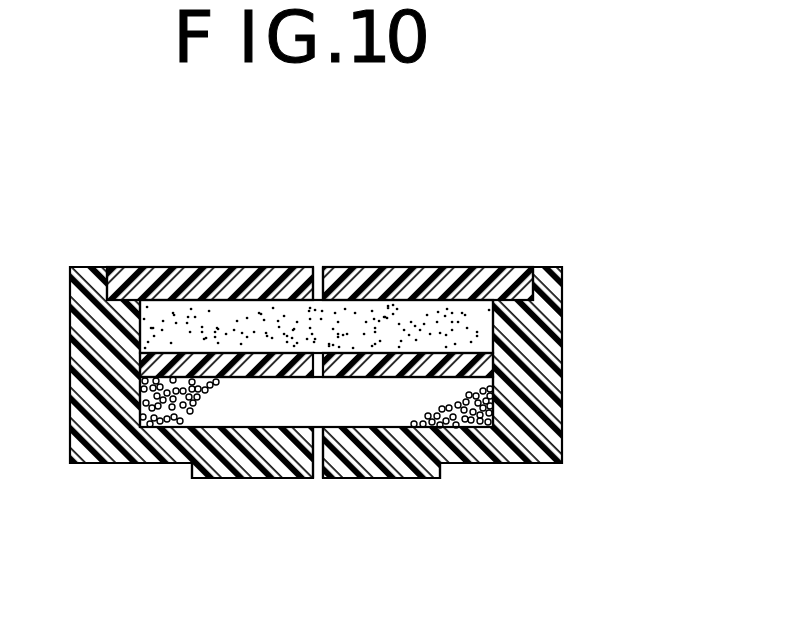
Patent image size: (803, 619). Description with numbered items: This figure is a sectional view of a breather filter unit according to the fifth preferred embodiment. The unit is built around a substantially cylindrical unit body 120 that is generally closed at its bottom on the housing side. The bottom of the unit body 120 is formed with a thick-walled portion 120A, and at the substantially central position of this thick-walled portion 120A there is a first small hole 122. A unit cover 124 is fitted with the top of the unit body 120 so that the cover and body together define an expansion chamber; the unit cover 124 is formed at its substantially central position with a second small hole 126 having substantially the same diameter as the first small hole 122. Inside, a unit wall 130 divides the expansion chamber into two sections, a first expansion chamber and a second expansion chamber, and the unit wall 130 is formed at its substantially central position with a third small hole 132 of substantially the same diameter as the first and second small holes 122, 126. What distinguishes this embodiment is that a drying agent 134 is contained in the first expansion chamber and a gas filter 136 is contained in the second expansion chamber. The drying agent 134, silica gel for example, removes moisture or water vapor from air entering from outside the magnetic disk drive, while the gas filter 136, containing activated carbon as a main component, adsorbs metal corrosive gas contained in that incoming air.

The unit body 120 is at (563, 387).
The thick-walled portion 120A is at (408, 478).
The first small hole 122 is at (318, 455).
The unit cover 124 is at (436, 282).
The second small hole 126 is at (317, 275).
The unit wall 130 is at (361, 377).
The third small hole 132 is at (316, 362).
The drying agent 134 is at (185, 322).
The gas filter 136 is at (167, 420).